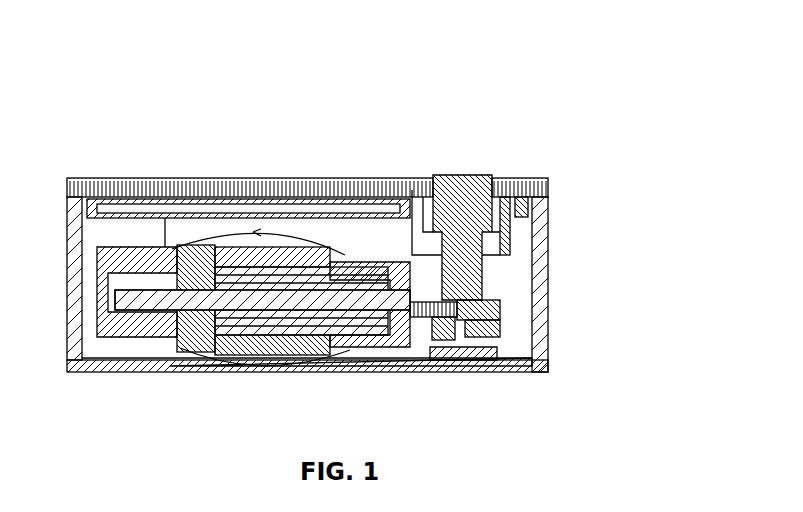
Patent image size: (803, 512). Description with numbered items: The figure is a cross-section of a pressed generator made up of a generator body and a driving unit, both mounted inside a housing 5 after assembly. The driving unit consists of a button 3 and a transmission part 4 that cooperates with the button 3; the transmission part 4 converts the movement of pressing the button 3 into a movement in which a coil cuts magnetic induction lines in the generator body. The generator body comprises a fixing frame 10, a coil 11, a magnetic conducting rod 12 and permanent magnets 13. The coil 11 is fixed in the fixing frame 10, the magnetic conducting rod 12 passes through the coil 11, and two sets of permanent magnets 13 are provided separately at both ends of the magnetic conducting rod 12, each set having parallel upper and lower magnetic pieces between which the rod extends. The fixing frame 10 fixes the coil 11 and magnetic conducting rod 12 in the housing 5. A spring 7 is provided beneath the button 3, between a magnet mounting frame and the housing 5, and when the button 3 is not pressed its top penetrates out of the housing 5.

The button 3 is at (457, 173).
The transmission part 4 is at (450, 320).
The housing 5 is at (532, 175).
The spring 7 is at (490, 338).
The fixing frame 10 is at (264, 252).
The coil 11 is at (290, 332).
The magnetic conducting rod 12 is at (223, 307).
The permanent magnets 13 is at (128, 262).